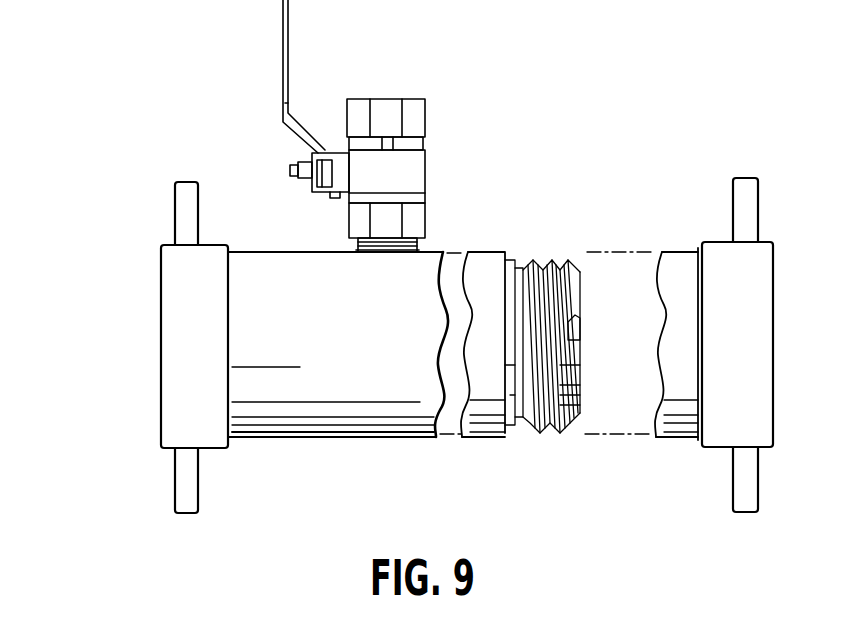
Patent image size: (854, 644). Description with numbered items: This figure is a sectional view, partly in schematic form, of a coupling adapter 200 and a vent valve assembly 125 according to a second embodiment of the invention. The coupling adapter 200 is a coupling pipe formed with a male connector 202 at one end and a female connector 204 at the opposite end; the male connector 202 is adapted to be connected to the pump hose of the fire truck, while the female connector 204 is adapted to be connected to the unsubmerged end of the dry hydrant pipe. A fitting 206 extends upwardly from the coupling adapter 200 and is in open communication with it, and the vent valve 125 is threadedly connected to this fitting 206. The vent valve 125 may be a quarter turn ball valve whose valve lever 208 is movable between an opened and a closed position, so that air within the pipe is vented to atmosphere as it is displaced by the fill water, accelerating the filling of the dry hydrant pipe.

The vent valve assembly 125 is at (443, 220).
The coupling adapter 200 is at (333, 455).
The male connector 202 is at (567, 245).
The female connector 204 is at (146, 398).
The fitting 206 is at (345, 250).
The valve lever 208 is at (281, 88).